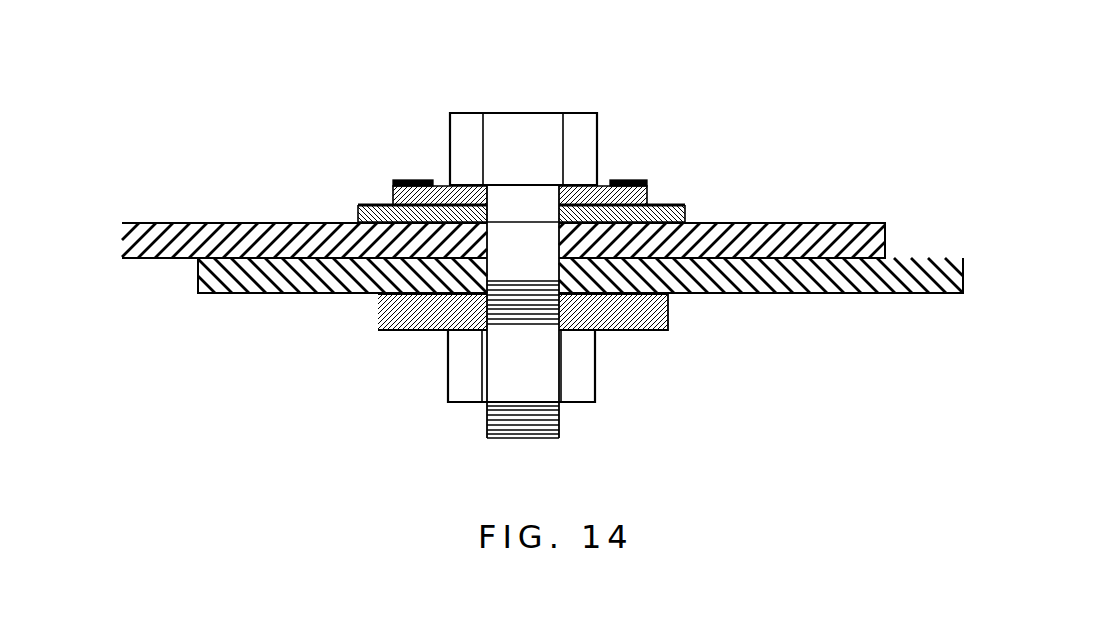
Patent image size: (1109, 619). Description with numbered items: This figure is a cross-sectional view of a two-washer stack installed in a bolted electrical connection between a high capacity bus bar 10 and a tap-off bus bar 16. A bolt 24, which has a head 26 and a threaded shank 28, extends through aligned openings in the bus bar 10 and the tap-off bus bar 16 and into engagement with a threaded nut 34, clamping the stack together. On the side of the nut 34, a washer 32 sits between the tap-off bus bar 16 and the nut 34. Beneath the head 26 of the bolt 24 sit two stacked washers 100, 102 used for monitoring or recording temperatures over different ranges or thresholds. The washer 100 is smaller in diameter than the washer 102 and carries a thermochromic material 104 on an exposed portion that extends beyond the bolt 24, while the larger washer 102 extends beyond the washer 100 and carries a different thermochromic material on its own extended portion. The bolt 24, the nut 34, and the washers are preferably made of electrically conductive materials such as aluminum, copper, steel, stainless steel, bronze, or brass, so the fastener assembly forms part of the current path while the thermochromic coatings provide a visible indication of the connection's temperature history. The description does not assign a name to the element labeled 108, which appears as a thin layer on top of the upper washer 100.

The bus bar 10 is at (170, 223).
The tap-off bus bar 16 is at (920, 284).
The bolt 24 is at (546, 111).
The head 26 is at (441, 118).
The threaded shank 28 is at (486, 418).
The washer 32 is at (374, 324).
The threaded nut 34 is at (578, 372).
The washer 100 is at (652, 191).
The washer 102 is at (352, 206).
The thermochromic material 104 is at (372, 203).
The sealing pad 108 is at (630, 181).